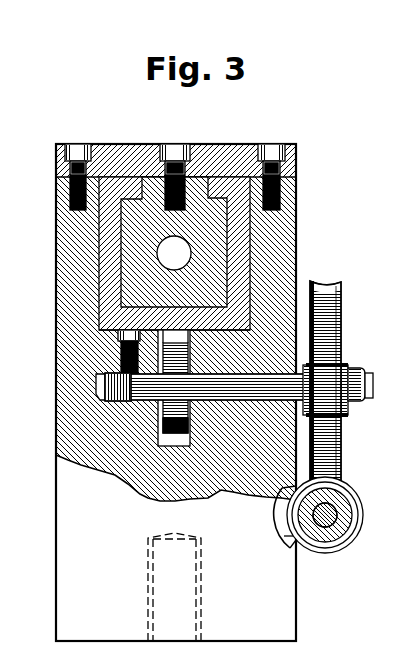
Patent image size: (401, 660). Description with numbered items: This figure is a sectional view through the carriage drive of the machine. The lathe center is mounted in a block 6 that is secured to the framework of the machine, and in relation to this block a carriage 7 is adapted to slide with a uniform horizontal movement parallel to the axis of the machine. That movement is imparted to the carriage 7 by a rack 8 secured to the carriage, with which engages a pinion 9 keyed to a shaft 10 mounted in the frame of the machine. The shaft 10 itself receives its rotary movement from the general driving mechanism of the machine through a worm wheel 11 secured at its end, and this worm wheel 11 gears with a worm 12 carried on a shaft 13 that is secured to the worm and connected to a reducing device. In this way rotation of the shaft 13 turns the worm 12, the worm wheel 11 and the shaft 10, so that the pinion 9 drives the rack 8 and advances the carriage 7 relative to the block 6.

The block 6 is at (199, 208).
The carriage 7 is at (108, 182).
The rack 8 is at (197, 318).
The pinion 9 is at (156, 422).
The shaft 10 is at (90, 393).
The worm wheel 11 is at (333, 317).
The worm 12 is at (328, 492).
The shaft 13 is at (318, 509).